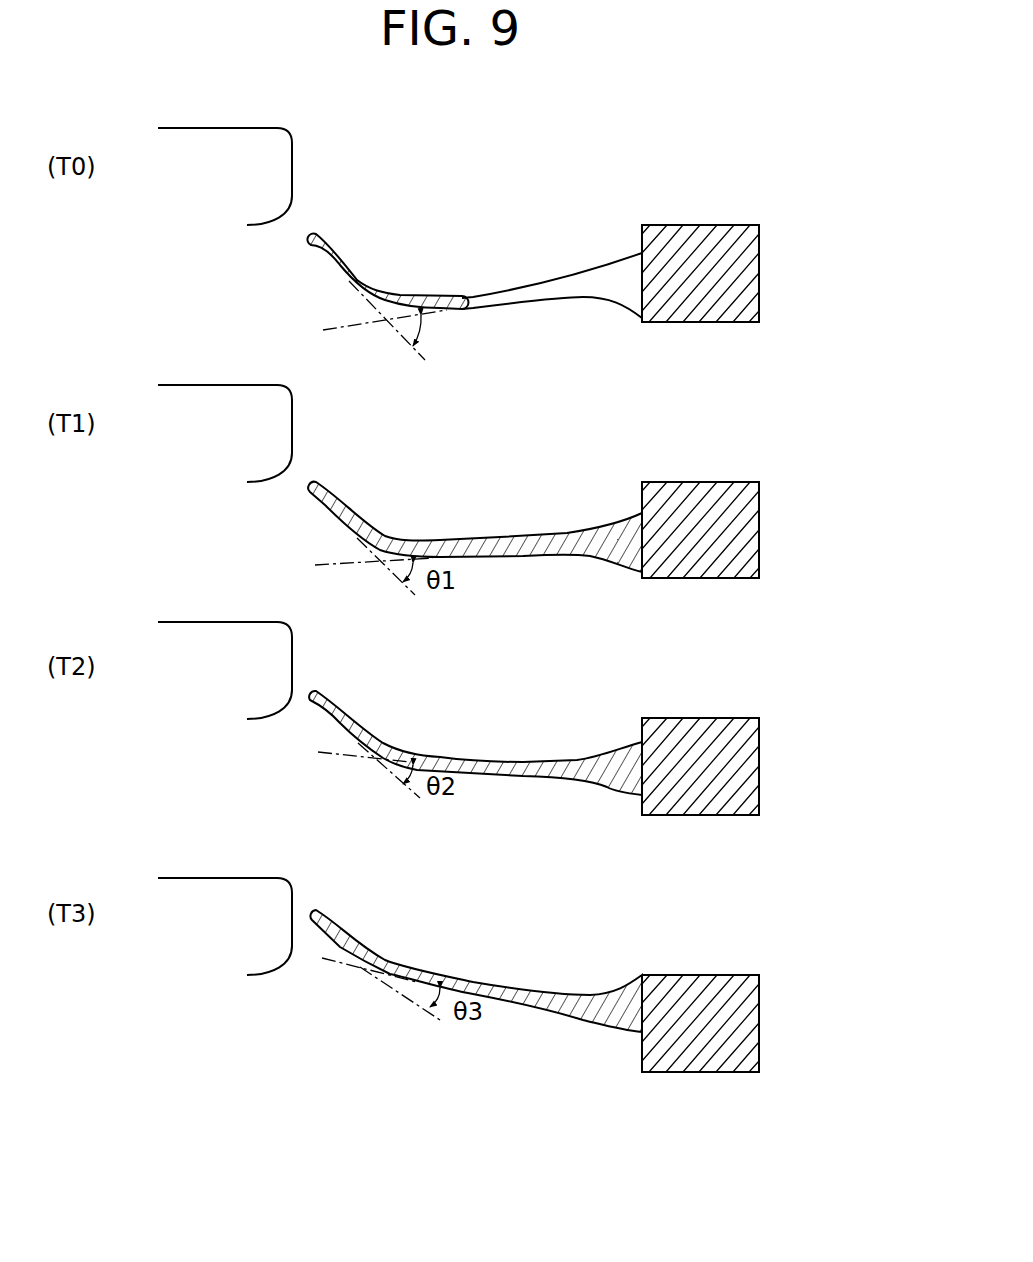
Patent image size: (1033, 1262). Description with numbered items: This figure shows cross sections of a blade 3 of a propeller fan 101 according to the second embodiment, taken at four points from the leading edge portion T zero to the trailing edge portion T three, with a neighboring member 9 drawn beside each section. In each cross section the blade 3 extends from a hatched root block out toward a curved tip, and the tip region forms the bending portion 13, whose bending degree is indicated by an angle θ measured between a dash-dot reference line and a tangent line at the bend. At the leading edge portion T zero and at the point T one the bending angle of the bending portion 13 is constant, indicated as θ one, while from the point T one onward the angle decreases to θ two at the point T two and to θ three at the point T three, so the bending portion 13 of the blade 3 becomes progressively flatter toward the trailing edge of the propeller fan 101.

The flange / contact wall 9 is at (268, 155).
The bending portion 13 is at (400, 290).
The blade 3 is at (561, 277).
The propeller fan 101 is at (724, 141).